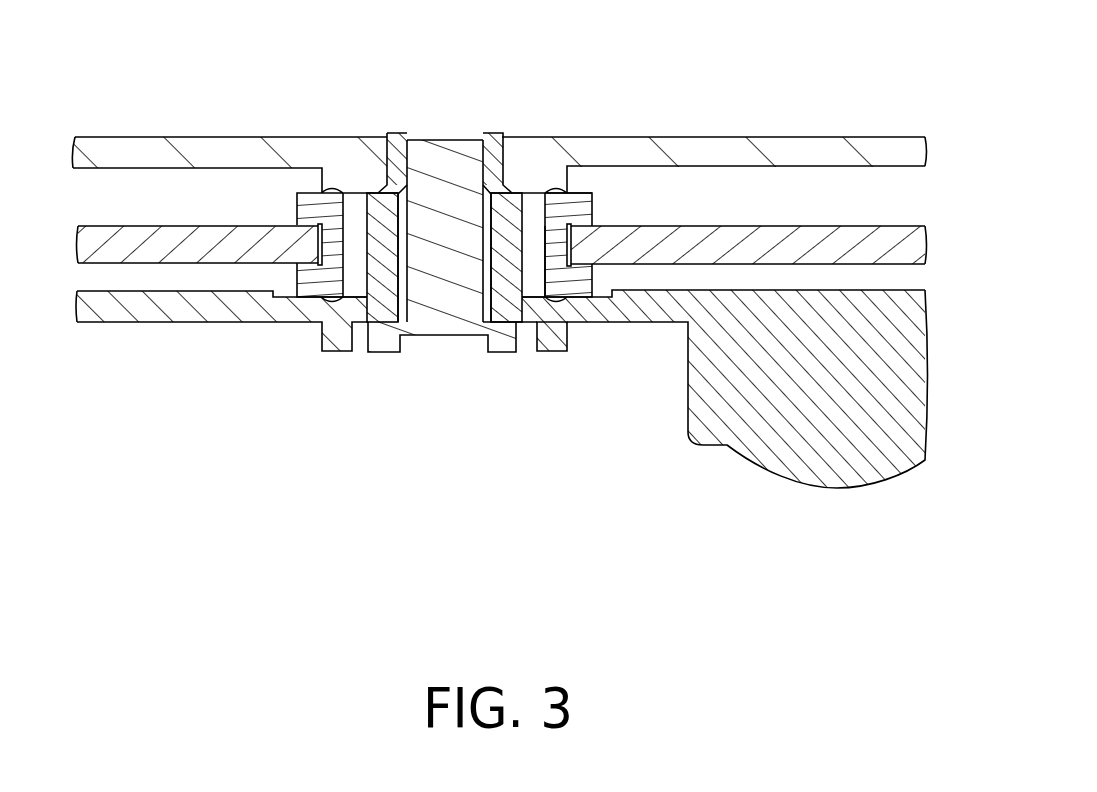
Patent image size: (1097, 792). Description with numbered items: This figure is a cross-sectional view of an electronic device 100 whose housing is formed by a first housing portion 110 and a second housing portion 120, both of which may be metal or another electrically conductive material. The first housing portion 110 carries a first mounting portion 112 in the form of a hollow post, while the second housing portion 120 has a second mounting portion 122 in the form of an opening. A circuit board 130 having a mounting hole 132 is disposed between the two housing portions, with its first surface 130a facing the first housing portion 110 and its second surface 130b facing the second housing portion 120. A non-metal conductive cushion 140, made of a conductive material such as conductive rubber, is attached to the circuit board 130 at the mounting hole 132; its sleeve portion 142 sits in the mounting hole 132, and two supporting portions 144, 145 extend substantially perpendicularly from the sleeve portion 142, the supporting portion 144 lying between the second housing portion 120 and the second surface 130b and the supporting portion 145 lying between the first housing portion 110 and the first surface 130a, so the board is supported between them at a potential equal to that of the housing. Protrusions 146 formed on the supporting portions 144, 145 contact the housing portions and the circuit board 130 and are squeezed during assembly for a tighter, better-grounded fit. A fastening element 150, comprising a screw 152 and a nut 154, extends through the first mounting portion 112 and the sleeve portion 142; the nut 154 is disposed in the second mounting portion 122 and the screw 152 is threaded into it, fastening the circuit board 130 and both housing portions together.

The electronic device 100 is at (692, 561).
The first housing portion 110 is at (212, 307).
The first mounting portion 112 is at (507, 297).
The second housing portion 120 is at (227, 148).
The second mounting portion 122 is at (503, 163).
The circuit board 130 is at (170, 244).
The first surface of the circuit board 130a is at (685, 264).
The second surface of the circuit board 130b is at (815, 226).
The mounting hole 132 is at (320, 248).
The non-metal conductive cushion 140 is at (727, 25).
The sleeve portion 142 is at (555, 245).
The supporting portion 144 is at (575, 203).
The supporting portion 145 is at (580, 283).
The protrusions 146 is at (308, 222).
The fastening element 150 is at (322, 42).
The screw 152 is at (437, 147).
The nut 154 is at (397, 137).